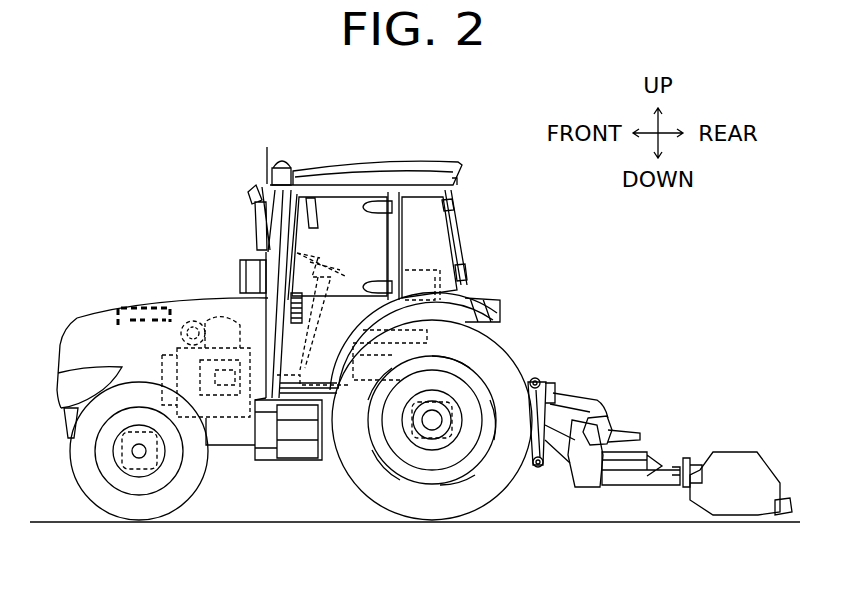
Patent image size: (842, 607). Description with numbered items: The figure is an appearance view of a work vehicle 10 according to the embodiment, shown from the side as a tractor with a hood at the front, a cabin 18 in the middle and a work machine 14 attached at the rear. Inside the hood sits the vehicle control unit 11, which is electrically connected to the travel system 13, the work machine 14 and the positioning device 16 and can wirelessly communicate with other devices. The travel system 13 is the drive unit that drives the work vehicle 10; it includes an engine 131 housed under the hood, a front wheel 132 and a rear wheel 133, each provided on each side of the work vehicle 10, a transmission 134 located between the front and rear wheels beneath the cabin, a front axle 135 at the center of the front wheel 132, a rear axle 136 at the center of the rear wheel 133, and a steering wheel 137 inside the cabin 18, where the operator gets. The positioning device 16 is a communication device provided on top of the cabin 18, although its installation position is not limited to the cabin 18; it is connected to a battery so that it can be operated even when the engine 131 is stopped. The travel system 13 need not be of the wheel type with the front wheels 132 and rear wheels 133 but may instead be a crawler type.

The work vehicle 10 is at (130, 172).
The vehicle control unit 11 is at (141, 303).
The travel system 13 is at (61, 476).
The work machine 14 is at (680, 411).
The positioning device 16 is at (281, 133).
The cabin 18 is at (477, 250).
The engine 131 is at (208, 310).
The front wheel 132 is at (178, 500).
The rear wheel 133 is at (392, 498).
The transmission 134 is at (300, 460).
The front axle 135 is at (137, 470).
The rear axle 136 is at (432, 432).
The steering wheel 137 is at (348, 280).